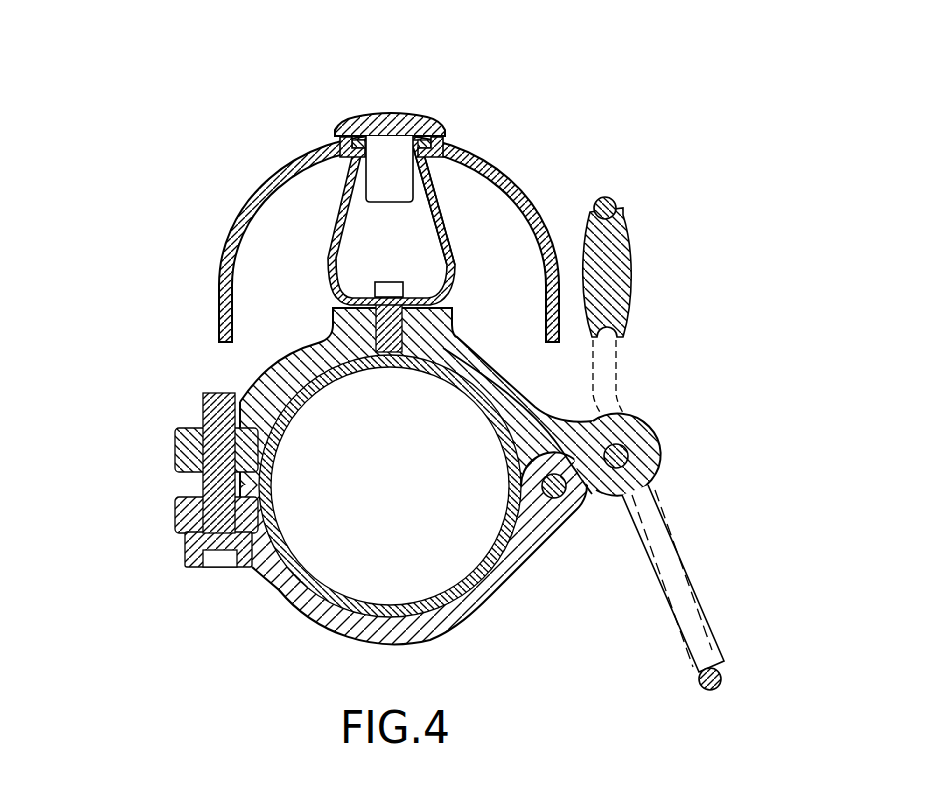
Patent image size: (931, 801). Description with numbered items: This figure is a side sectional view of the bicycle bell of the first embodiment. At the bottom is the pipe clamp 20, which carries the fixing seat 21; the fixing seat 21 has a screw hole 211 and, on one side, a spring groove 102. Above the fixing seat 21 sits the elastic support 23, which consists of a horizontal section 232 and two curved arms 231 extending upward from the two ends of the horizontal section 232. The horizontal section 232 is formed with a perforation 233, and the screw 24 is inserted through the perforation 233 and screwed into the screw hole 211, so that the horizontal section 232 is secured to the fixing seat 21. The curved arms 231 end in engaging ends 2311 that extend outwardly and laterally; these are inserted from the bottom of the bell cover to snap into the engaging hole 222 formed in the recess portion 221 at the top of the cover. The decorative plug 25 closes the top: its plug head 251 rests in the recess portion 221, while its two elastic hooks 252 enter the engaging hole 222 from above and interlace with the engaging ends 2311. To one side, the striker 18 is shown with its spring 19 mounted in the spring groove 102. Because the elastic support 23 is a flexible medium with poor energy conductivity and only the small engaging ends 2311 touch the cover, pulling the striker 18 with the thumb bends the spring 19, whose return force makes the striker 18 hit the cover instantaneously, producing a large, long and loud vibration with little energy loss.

The striker 18 is at (628, 222).
The spring 19 is at (670, 550).
The pipe clamp 20 is at (240, 420).
The fixing seat 21 is at (335, 312).
The screw hole 211 is at (375, 285).
The recess portion 221 is at (338, 130).
The engaging hole 222 is at (445, 142).
The elastic support 23 is at (390, 185).
The curved arms 231 is at (343, 207).
The engaging ends 2311 is at (342, 137).
The horizontal section 232 is at (332, 255).
The perforation 233 is at (455, 297).
The screw 24 is at (445, 343).
The decorative plug 25 is at (446, 101).
The plug head 251 is at (405, 114).
The elastic hooks 252 is at (398, 175).
The spring groove 102 is at (632, 448).